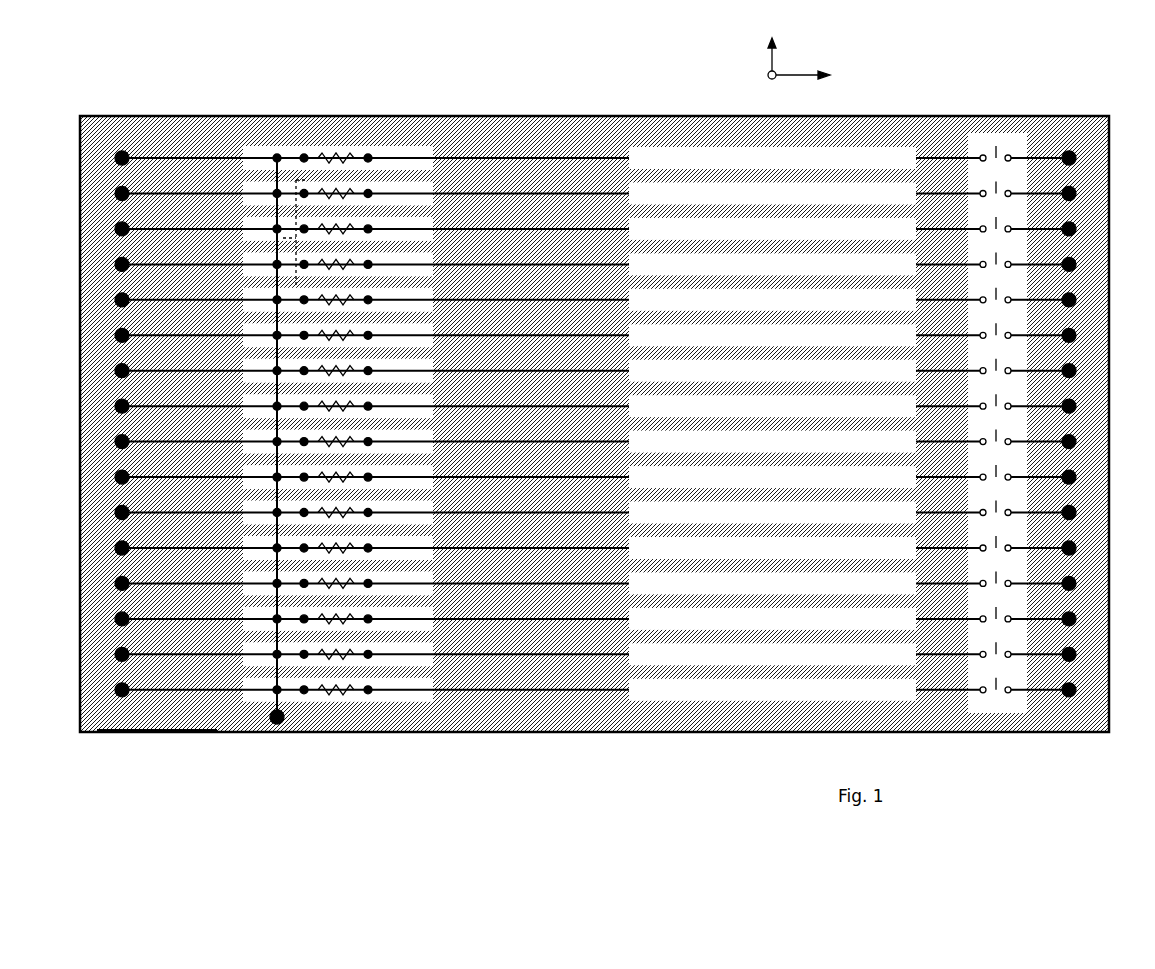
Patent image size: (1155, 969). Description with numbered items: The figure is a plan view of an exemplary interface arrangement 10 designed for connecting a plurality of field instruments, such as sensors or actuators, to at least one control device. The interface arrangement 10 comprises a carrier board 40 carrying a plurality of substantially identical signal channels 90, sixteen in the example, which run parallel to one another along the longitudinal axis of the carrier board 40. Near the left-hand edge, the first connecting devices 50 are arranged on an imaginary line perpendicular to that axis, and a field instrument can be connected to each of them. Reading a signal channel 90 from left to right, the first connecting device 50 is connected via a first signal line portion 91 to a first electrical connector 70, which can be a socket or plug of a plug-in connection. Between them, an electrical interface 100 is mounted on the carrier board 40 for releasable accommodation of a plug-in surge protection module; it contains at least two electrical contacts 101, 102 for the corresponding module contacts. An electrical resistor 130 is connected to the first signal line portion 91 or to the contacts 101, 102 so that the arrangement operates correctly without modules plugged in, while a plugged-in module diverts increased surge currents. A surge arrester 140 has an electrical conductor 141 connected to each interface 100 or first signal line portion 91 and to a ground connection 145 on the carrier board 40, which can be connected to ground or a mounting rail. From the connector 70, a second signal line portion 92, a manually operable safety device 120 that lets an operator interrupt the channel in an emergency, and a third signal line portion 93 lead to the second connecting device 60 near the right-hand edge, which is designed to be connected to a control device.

The interface arrangement 10 is at (608, 426).
The carrier board 40 is at (178, 116).
The first connecting device 50 is at (124, 152).
The second connecting device 60 is at (1069, 152).
The first electrical connector 70 is at (660, 152).
The signal channel 90 is at (505, 135).
The first signal line portion 91 is at (465, 157).
The second signal line portion 92 is at (925, 160).
The third signal line portion 93 is at (1043, 157).
The electrical interface 100 is at (410, 146).
The electrical contact 101 is at (305, 155).
The electrical contact 102 is at (369, 155).
The manually operable safety device 120 is at (988, 150).
The electrical resistor 130 is at (343, 155).
The surge arrester 140 is at (270, 184).
The electrical conductor 141 is at (278, 155).
The ground connection 145 is at (284, 717).